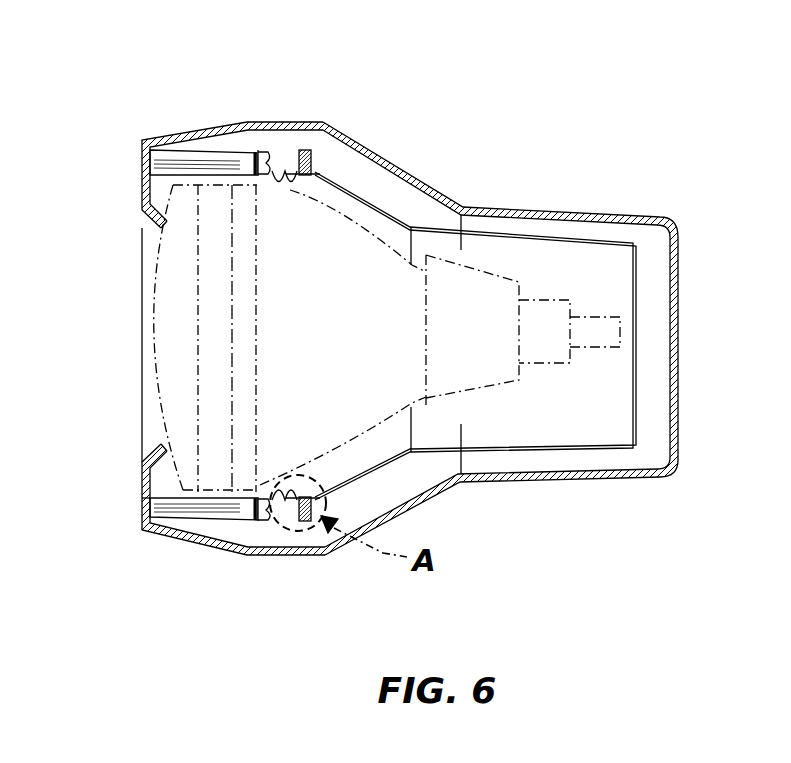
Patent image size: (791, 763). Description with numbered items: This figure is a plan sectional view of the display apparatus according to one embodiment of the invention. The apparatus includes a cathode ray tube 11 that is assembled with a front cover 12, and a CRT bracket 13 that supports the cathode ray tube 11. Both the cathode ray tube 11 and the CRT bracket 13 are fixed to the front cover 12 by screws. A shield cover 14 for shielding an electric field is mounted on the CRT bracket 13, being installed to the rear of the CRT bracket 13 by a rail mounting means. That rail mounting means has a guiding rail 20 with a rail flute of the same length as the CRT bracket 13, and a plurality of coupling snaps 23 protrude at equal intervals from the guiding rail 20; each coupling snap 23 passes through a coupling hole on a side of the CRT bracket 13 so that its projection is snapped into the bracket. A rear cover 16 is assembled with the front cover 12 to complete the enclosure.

The cathode ray tube 11 is at (157, 273).
The front cover 12 is at (148, 137).
The CRT bracket 13 is at (258, 176).
The shield cover 14 is at (562, 240).
The rear cover 16 is at (585, 480).
The guiding rail 20 is at (303, 137).
The coupling snap 23 is at (274, 171).